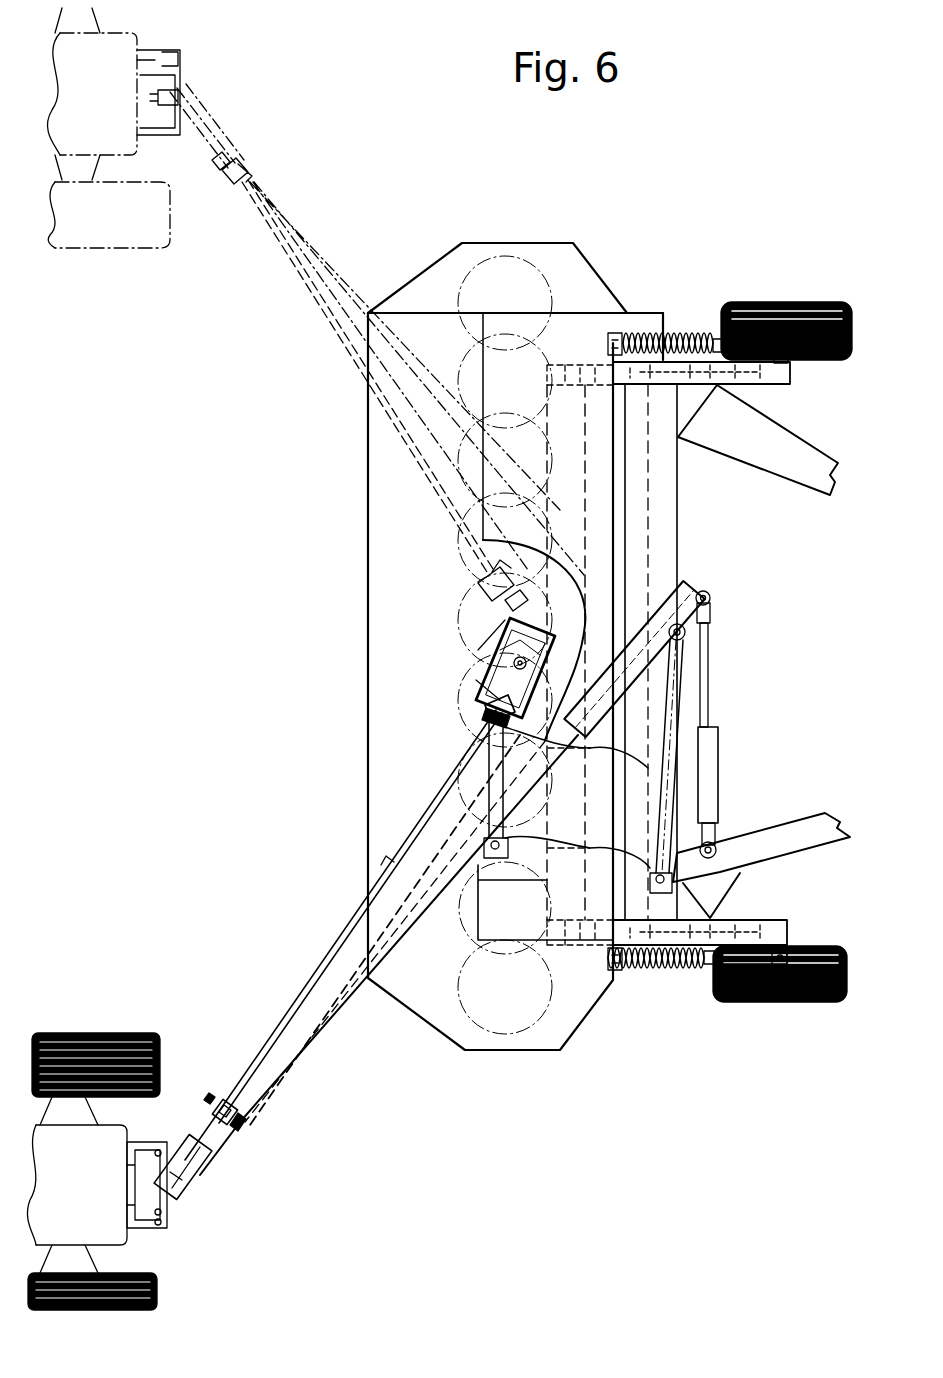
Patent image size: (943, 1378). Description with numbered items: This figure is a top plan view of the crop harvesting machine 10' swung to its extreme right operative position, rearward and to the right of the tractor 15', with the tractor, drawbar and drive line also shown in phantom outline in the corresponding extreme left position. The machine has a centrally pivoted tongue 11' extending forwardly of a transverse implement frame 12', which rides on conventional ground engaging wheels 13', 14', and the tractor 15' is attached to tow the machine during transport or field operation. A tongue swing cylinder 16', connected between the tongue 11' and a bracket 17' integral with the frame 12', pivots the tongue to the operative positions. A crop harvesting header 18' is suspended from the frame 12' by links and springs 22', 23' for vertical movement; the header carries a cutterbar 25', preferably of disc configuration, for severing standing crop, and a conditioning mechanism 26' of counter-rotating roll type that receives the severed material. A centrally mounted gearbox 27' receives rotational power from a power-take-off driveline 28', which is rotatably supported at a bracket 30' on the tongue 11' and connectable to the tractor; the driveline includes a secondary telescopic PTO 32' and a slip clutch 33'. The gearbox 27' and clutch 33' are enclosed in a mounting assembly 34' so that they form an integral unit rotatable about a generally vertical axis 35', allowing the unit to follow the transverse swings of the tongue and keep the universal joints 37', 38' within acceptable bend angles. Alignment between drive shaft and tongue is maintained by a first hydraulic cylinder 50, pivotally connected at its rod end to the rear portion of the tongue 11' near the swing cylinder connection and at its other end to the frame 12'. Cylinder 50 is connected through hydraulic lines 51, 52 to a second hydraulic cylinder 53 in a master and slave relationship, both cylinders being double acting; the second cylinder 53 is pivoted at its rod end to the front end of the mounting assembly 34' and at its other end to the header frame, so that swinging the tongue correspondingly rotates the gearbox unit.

The crop harvesting machine 10' is at (425, 651).
The centrally pivoted tongue 11' is at (366, 967).
The transverse implement frame 12' is at (681, 652).
The ground engaging wheel 13' is at (775, 1000).
The ground engaging wheel 14' is at (765, 372).
The tractor 15' is at (97, 1126).
The tongue swing cylinder 16' is at (745, 724).
The bracket 17' is at (761, 865).
The crop harvesting header 18' is at (514, 615).
The spring 22' is at (660, 994).
The spring 23' is at (675, 300).
The cutterbar 25' is at (552, 1026).
The conditioning mechanism 26' is at (663, 652).
The gearbox 27' is at (465, 663).
The power-take-off driveline 28' is at (393, 930).
The bracket 30' is at (290, 1147).
The secondary telescopic PTO 32' is at (340, 935).
The slip clutch 33' is at (415, 660).
The mounting assembly 34' is at (651, 635).
The vertical axis 35' is at (458, 572).
The universal joint 37' is at (444, 766).
The universal joint 38' is at (279, 1109).
The first hydraulic cylinder 50 is at (667, 813).
The hydraulic line 51 is at (650, 862).
The hydraulic line 52 is at (647, 760).
The second hydraulic cylinder 53 is at (460, 763).